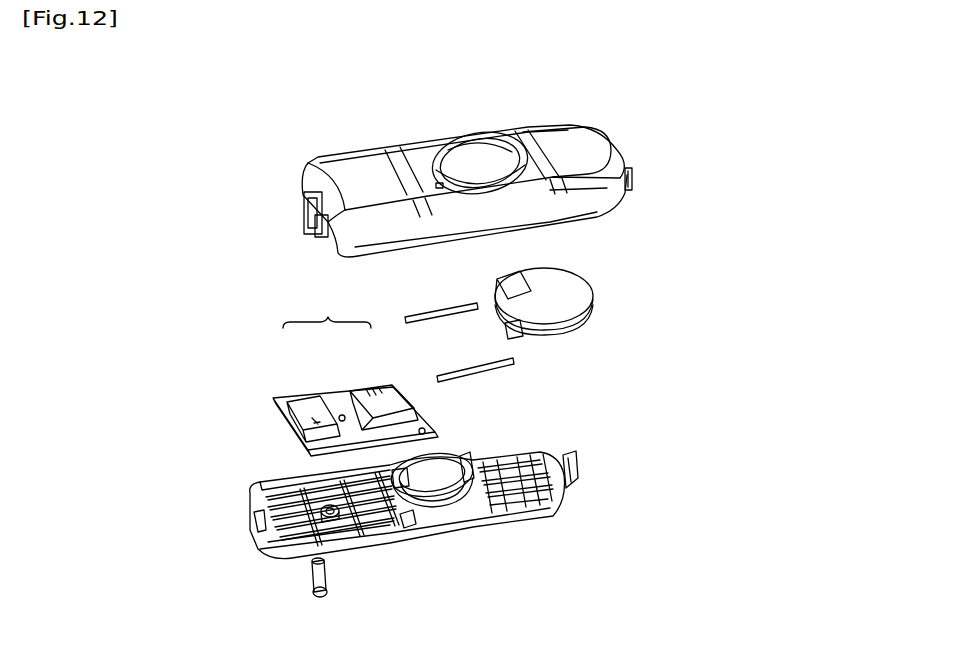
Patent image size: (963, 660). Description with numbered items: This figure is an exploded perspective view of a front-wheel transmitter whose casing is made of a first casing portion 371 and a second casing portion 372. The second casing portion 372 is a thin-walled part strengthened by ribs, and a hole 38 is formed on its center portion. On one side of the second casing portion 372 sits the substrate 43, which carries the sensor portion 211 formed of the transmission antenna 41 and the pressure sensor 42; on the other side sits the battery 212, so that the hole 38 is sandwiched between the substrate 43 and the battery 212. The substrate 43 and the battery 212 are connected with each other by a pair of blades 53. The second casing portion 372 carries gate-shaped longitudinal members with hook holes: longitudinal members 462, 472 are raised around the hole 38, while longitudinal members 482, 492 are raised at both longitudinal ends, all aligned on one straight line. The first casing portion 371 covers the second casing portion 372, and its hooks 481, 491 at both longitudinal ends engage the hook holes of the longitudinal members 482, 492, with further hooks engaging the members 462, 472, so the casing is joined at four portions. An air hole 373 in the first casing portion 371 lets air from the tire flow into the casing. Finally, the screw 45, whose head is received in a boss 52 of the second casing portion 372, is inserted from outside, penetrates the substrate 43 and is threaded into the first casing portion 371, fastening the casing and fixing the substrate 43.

The hole 38 is at (482, 177).
The first casing portion 371 is at (578, 142).
The second casing portion 372 is at (492, 540).
The air hole 373 is at (437, 183).
The hook 481 is at (313, 222).
The longitudinal member 482 is at (260, 517).
The hook 491 is at (633, 171).
The longitudinal member 492 is at (578, 466).
The battery 212 is at (570, 294).
The sensor portion 211 is at (327, 309).
The transmission antenna 41 is at (307, 407).
The pressure sensor 42 is at (377, 394).
The substrate 43 is at (403, 424).
The blades 53 is at (472, 361).
The boss 52 is at (300, 493).
The longitudinal member 472 is at (468, 460).
The longitudinal member 462 is at (405, 527).
The screw 45 is at (330, 575).